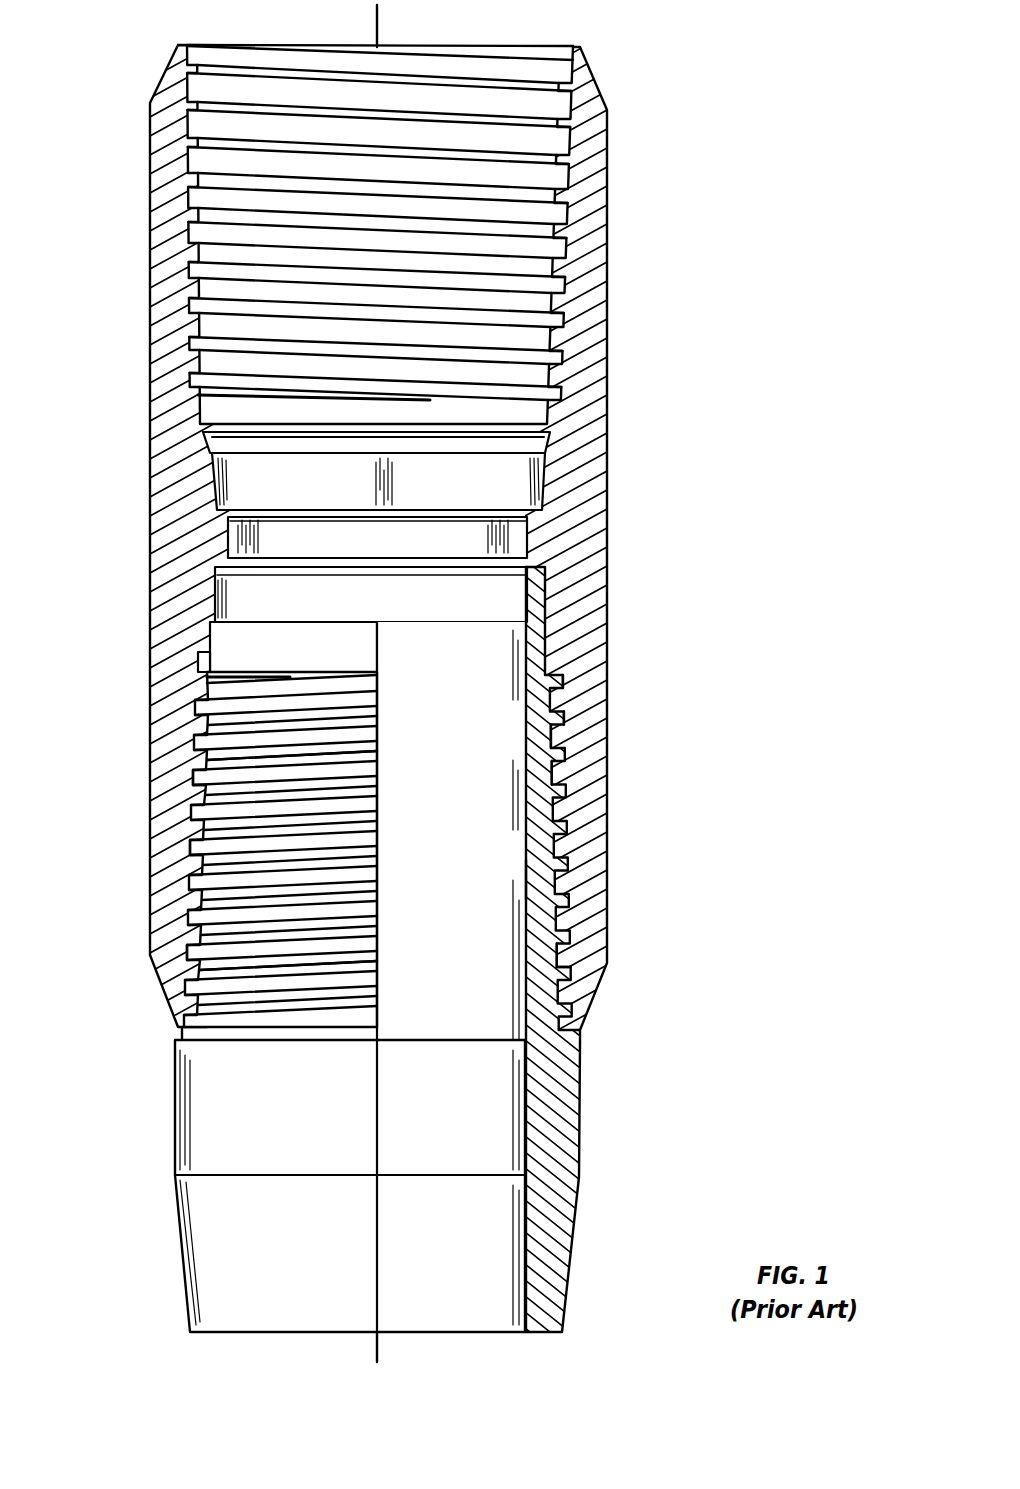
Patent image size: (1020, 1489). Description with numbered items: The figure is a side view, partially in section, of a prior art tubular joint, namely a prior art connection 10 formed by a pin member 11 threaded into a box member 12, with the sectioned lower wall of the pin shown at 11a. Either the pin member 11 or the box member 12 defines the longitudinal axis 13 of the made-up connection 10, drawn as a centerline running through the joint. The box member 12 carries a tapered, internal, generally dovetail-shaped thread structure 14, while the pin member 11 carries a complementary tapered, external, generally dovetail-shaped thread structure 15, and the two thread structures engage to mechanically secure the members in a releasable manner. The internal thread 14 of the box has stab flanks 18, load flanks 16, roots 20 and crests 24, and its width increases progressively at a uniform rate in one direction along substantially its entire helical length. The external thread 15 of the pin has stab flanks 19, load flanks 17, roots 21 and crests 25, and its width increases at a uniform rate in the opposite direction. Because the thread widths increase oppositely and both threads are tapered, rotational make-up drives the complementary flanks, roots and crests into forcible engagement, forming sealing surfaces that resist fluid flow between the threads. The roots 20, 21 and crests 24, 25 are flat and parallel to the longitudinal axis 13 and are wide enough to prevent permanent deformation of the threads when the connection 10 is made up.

The prior art connection 10 is at (573, 662).
The pin member 11 is at (190, 1255).
The box end wall 11a is at (548, 1255).
The box member 12 is at (575, 498).
The longitudinal axis 13 is at (395, 688).
The internal thread structure 14 is at (560, 922).
The external thread structure 15 is at (527, 880).
The load flanks 16 is at (593, 698).
The load flanks 17 is at (563, 727).
The stab flanks 18 is at (560, 965).
The stab flanks 19 is at (560, 742).
The roots 20 is at (190, 850).
The roots 21 is at (555, 783).
The crests 24 is at (193, 792).
The crests 25 is at (185, 962).